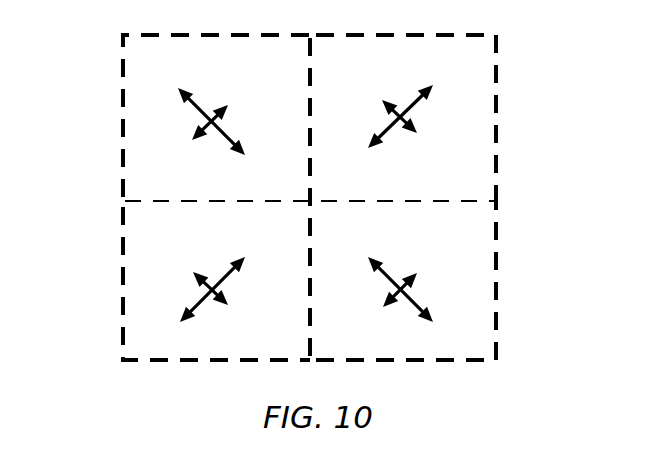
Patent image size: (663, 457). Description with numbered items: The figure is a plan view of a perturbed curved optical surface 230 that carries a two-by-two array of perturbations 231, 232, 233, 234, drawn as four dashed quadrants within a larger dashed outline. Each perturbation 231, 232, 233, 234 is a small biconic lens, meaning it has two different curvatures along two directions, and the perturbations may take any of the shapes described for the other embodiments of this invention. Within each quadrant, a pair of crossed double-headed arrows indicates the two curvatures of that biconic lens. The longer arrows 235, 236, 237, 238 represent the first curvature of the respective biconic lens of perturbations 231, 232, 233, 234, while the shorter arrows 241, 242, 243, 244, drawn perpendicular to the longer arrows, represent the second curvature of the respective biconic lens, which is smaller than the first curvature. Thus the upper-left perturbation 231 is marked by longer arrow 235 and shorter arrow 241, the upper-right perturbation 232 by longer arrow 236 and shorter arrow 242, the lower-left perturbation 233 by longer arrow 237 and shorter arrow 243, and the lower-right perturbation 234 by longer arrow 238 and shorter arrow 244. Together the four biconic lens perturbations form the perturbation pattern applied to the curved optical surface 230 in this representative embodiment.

The perturbed curved optical surface 230 is at (313, 34).
The perturbation 231 is at (123, 75).
The perturbation 232 is at (497, 100).
The perturbation 233 is at (122, 260).
The perturbation 234 is at (497, 265).
The longer arrow 235 is at (180, 90).
The longer arrow 236 is at (435, 88).
The longer arrow 237 is at (243, 258).
The longer arrow 238 is at (372, 260).
The shorter arrow 241 is at (230, 108).
The shorter arrow 242 is at (383, 103).
The shorter arrow 243 is at (195, 275).
The shorter arrow 244 is at (415, 275).